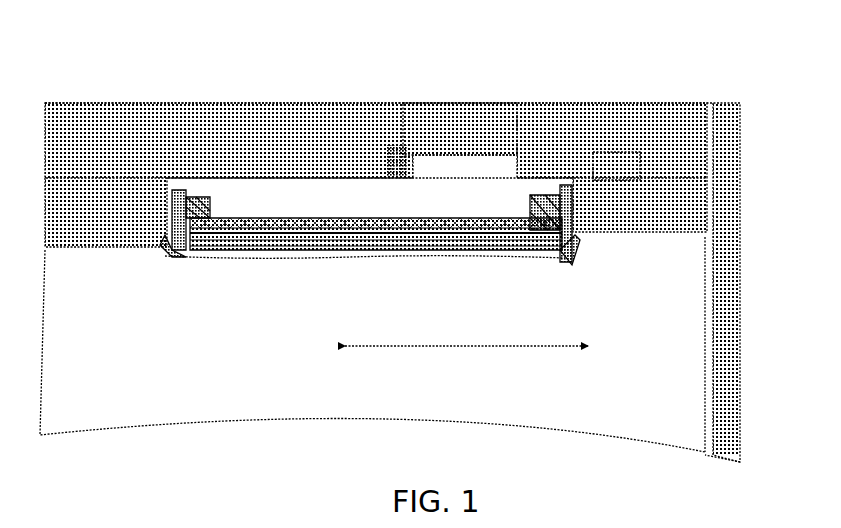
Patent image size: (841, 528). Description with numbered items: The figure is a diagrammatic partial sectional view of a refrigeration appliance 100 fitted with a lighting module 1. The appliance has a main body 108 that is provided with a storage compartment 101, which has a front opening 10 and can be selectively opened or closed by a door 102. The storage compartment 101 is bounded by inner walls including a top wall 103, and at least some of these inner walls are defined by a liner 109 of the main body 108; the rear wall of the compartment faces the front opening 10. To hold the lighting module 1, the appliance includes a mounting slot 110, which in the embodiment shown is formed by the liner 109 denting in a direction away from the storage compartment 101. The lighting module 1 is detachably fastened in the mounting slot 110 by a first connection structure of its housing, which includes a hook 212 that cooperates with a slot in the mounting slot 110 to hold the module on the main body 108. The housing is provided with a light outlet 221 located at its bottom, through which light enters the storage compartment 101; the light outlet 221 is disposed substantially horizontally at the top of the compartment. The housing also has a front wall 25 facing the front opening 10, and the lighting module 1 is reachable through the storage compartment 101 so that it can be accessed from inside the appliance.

The refrigeration appliance 100 is at (295, 86).
The top wall 103 is at (485, 128).
The main body 108 is at (568, 105).
The door 102 is at (722, 163).
The hook 212 is at (183, 192).
The mounting slot 110 is at (428, 213).
The liner 109 is at (140, 247).
The lighting module 1 is at (372, 268).
The light outlet 221 is at (440, 245).
The front wall 25 is at (573, 240).
The front opening 10 is at (705, 390).
The storage compartment 101 is at (265, 386).